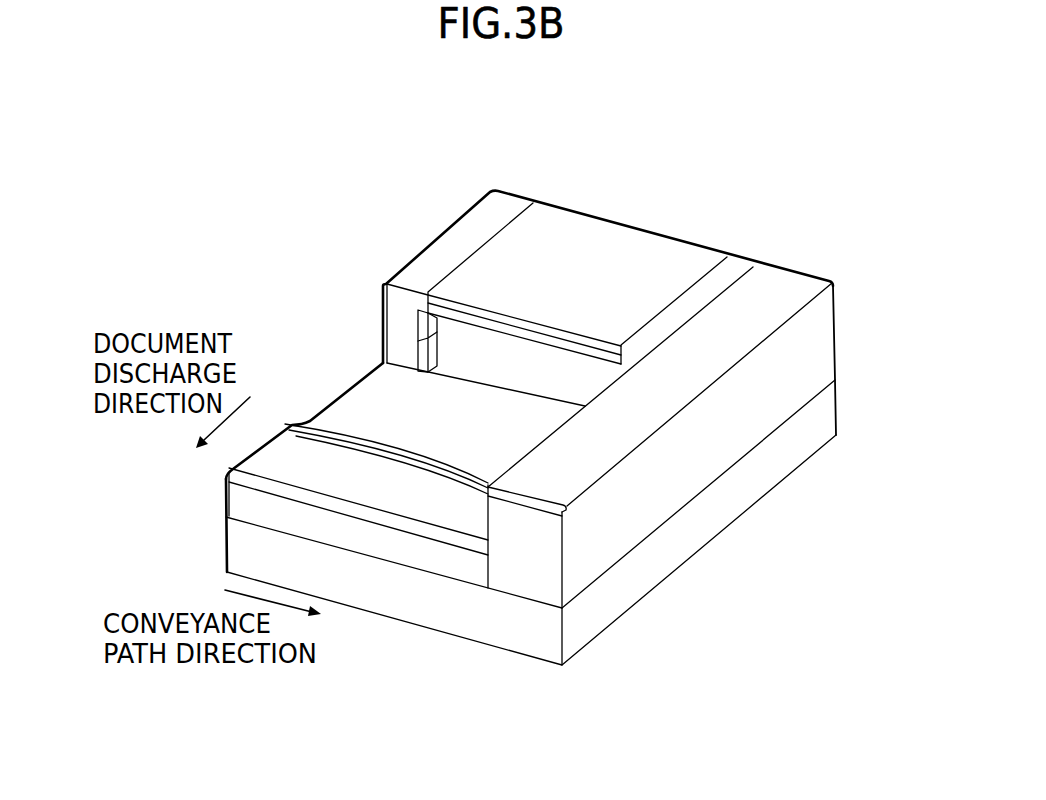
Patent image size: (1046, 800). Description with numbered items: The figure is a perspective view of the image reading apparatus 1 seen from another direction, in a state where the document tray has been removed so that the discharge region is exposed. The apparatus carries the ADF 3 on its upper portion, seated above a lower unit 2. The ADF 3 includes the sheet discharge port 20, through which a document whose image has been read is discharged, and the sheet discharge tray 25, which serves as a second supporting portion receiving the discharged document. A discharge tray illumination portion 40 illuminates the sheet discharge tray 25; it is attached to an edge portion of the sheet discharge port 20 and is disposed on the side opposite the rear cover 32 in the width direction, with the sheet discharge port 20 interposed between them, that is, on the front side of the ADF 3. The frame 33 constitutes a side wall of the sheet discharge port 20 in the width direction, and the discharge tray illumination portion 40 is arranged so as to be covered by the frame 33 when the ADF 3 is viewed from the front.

The image reading apparatus 1 is at (642, 207).
The lower unit 2 is at (830, 414).
The ADF 3 is at (830, 339).
The sheet discharge port 20 is at (508, 366).
The sheet discharge tray 25 is at (345, 408).
The rear cover 32 is at (778, 287).
The frame 33 is at (497, 205).
The discharge tray illumination portion 40 is at (418, 346).